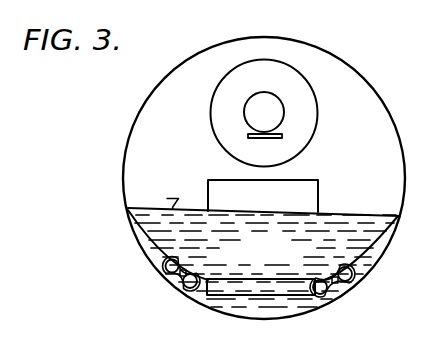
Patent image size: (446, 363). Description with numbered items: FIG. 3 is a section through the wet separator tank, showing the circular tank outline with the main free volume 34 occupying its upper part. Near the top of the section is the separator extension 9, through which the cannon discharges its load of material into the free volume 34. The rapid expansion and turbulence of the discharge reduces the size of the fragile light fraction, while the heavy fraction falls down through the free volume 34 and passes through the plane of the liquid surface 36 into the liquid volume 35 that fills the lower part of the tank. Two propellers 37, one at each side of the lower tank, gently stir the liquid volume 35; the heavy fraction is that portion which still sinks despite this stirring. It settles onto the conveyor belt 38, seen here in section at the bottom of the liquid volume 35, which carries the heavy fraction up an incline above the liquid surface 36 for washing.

The separator extension 9 is at (317, 123).
The free volume 34 is at (180, 150).
The liquid volume 35 is at (283, 256).
The liquid surface 36 is at (380, 214).
The propellers 37 is at (175, 268).
The conveyor belt 38 is at (263, 293).